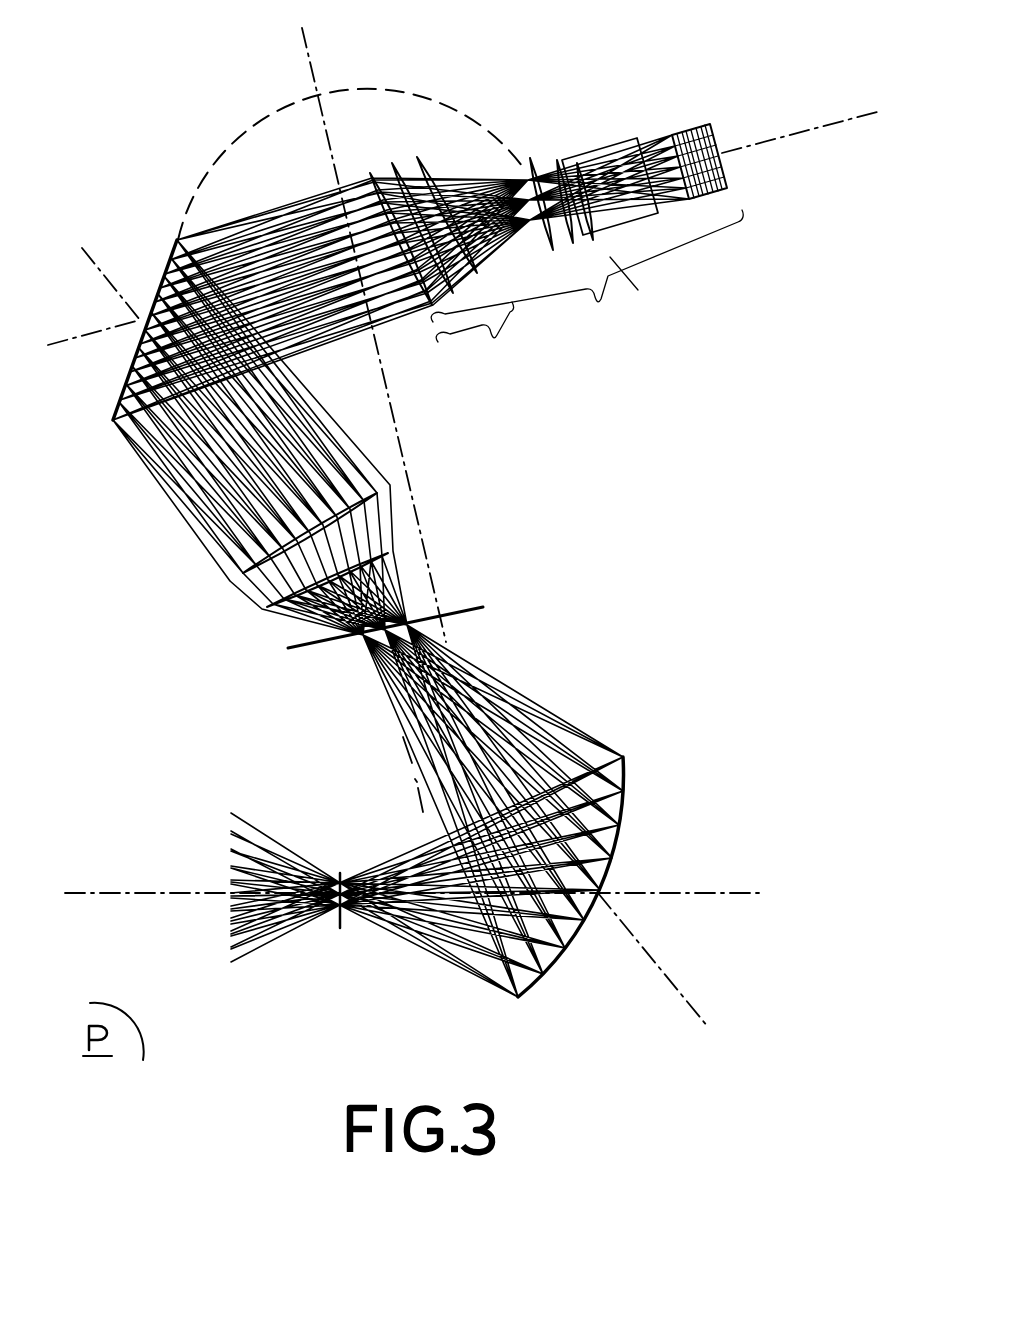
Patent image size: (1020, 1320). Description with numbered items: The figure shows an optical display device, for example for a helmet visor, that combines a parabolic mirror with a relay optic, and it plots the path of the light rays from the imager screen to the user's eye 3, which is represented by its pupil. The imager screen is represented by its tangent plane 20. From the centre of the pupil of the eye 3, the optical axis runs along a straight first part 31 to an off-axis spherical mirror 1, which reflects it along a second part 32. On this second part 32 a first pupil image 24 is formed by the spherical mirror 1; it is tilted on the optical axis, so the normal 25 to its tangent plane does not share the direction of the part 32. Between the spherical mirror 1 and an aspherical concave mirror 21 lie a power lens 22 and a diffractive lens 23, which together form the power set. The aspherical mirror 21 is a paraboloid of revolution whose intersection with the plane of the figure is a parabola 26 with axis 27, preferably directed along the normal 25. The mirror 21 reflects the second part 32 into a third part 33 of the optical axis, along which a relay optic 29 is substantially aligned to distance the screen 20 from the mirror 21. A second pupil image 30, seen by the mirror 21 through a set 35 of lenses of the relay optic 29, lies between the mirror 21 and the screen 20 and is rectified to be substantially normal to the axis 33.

The off-axis spherical mirror 1 is at (671, 760).
The user's eye 3 is at (331, 838).
The tangent plane of imager screen 20 is at (777, 178).
The aspherical concave mirror 21 is at (72, 432).
The power lens 22 is at (368, 454).
The diffractive lens 23 is at (392, 531).
The first pupil image 24 is at (486, 582).
The normal to tangent plane of first pupil image 25 is at (370, 780).
The parabola 26 is at (440, 82).
The axis of the parabola 27 is at (421, 392).
The relay optic 29 is at (628, 320).
The second pupil image 30 is at (566, 104).
The first part of the optical axis 31 is at (734, 915).
The second part of the optical axis 32 is at (750, 1004).
The third part of the optical axis 33 is at (853, 121).
The set of lenses 35 is at (524, 356).